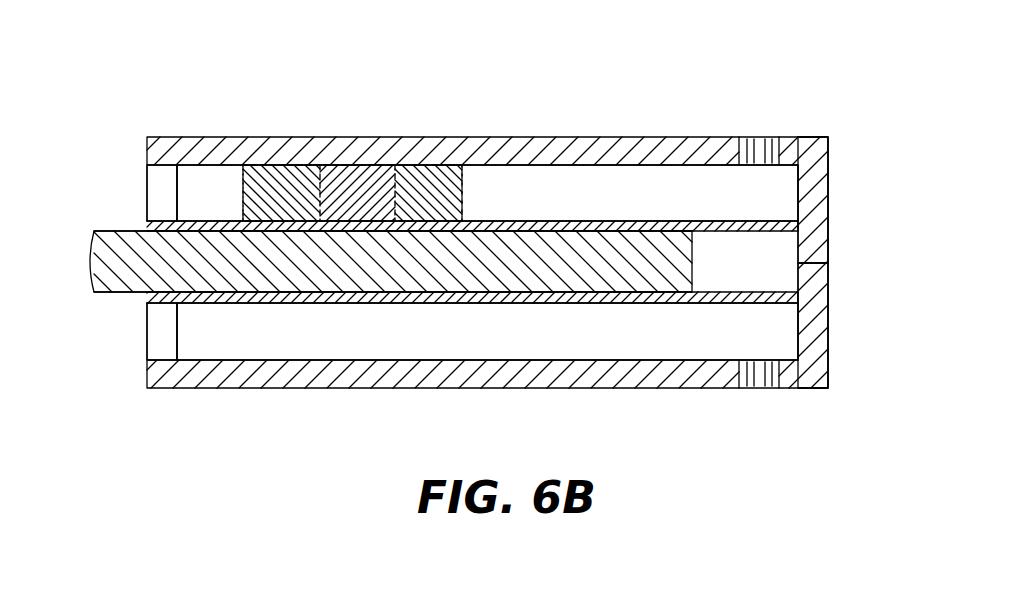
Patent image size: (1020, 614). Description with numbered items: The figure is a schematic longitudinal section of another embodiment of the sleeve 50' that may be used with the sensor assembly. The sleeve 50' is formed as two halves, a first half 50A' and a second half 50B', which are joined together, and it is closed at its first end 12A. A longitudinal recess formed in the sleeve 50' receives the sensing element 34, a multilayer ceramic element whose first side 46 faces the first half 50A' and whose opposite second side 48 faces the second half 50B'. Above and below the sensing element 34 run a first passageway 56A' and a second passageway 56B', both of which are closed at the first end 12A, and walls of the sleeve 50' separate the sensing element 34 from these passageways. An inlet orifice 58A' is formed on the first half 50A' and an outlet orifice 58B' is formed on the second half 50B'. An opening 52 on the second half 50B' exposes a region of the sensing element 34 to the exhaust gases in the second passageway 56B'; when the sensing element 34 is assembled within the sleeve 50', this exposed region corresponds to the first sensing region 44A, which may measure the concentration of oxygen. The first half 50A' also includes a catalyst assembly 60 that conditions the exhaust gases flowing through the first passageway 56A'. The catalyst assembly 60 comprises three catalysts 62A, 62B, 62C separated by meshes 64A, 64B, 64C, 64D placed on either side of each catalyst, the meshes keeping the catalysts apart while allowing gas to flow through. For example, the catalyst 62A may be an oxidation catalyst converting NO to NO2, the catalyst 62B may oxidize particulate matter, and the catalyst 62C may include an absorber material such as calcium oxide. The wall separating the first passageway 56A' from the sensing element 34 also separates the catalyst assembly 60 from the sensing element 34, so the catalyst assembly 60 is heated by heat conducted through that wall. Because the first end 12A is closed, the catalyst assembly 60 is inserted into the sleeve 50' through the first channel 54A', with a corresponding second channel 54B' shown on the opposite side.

The first end 12A is at (834, 176).
The sensing element 34 is at (98, 230).
The first sensing region 44A is at (330, 297).
The first side 46 is at (110, 238).
The second side 48 is at (93, 292).
The sleeve 50' is at (861, 256).
The first half 50A' is at (846, 200).
The second half 50B' is at (846, 325).
The opening 52 is at (308, 303).
The first channel 54A' is at (119, 173).
The second channel 54B' is at (118, 331).
The first passageway 56A' is at (487, 154).
The second passageway 56B' is at (487, 372).
The inlet orifice 58A' is at (765, 126).
The outlet orifice 58B' is at (766, 415).
The catalyst assembly 60 is at (530, 70).
The catalyst 62A is at (285, 137).
The catalyst 62B is at (365, 137).
The catalyst 62C is at (415, 137).
The mesh 64A is at (470, 137).
The mesh 64B is at (388, 137).
The mesh 64C is at (313, 137).
The mesh 64D is at (236, 137).